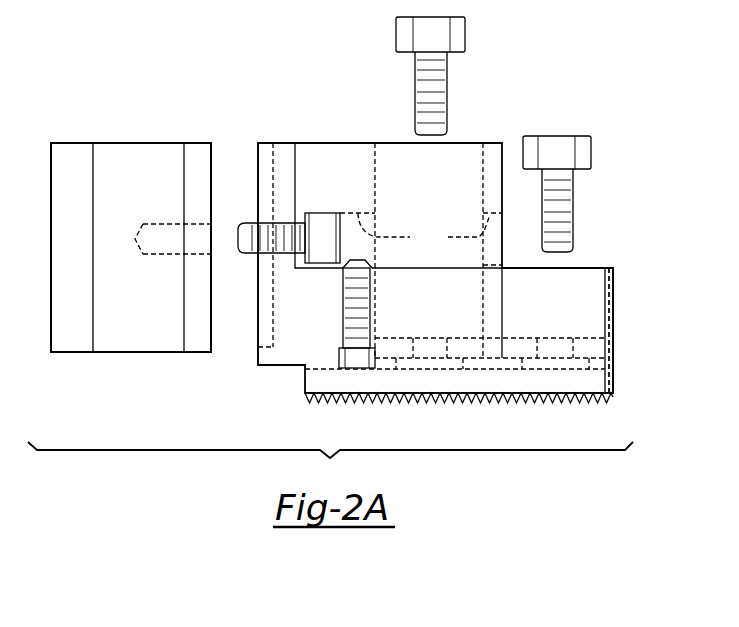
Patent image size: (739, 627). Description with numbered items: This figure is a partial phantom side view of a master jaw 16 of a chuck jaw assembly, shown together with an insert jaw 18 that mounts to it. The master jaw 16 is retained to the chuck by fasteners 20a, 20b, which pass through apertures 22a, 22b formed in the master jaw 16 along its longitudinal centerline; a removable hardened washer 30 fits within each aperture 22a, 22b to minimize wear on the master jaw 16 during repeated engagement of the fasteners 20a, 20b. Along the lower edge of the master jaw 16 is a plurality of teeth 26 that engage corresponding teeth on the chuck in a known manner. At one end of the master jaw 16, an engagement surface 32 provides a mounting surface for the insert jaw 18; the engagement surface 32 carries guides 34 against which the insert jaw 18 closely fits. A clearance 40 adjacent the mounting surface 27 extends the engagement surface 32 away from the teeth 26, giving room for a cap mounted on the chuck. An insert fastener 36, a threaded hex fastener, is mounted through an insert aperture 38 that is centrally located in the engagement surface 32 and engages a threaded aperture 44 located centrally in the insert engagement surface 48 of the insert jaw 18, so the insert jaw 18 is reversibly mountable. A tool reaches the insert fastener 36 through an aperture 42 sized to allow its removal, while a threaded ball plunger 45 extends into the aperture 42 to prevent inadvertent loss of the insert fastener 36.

The master jaw 16 is at (340, 150).
The insert jaw 18 is at (120, 150).
The fastener 20a is at (465, 31).
The fastener 20b is at (591, 148).
The aperture 22a is at (378, 143).
The aperture 22b is at (605, 270).
The teeth 26 is at (360, 400).
The mounting surface 27 is at (613, 395).
The removable hardened washer 30 is at (522, 338).
The engagement surface 32 is at (258, 152).
The guides 34 is at (269, 148).
The insert fastener 36 is at (322, 212).
The insert aperture 38 is at (253, 222).
The clearance 40 is at (283, 374).
The aperture 42 is at (415, 230).
The threaded aperture 44 is at (155, 258).
The threaded ball plunger 45 is at (343, 300).
The insert engagement surface 48 is at (212, 305).